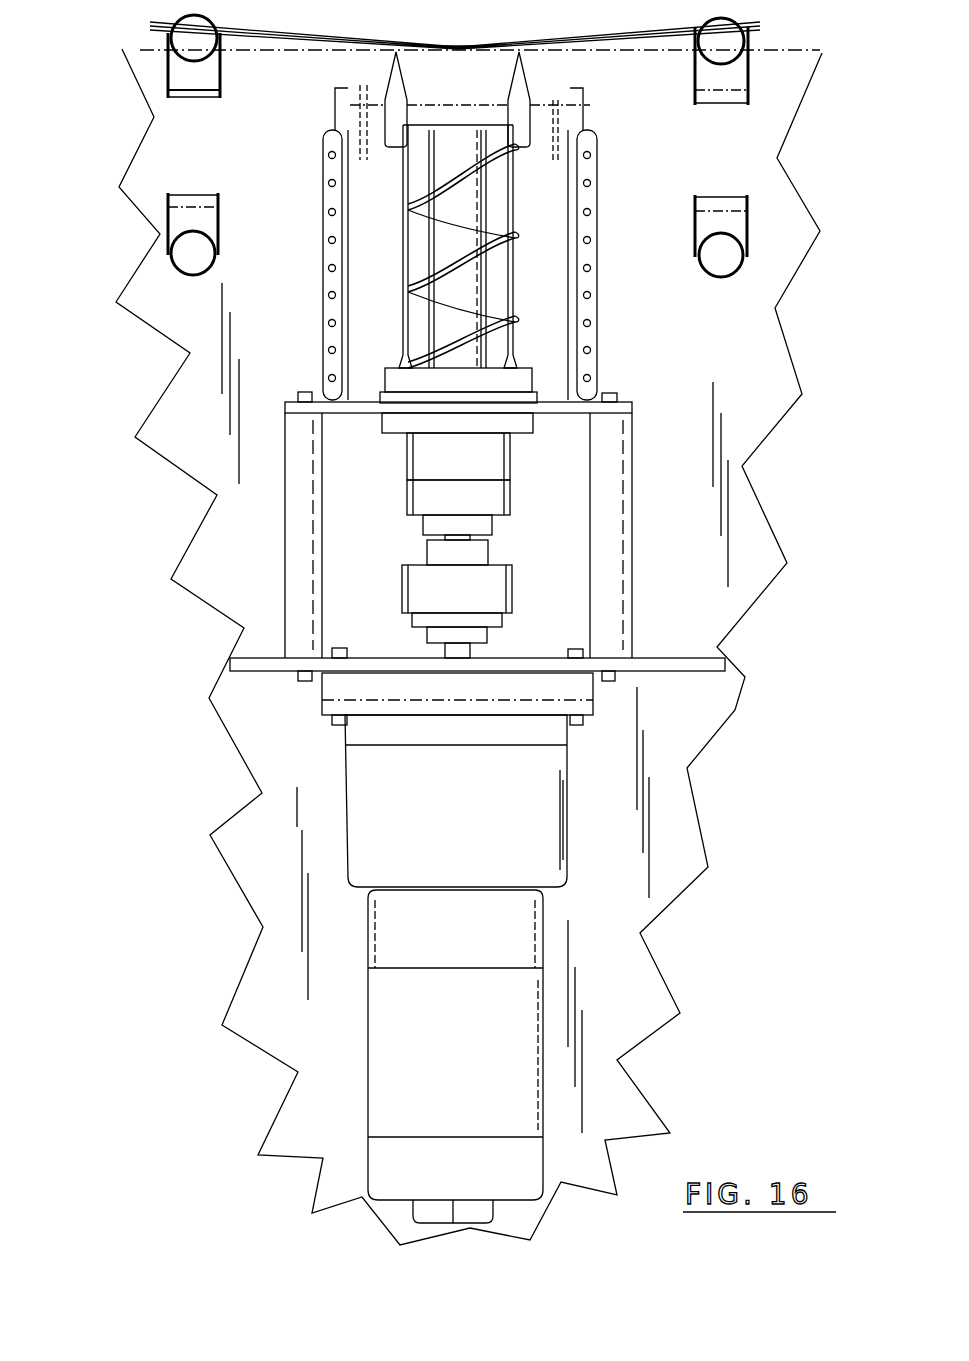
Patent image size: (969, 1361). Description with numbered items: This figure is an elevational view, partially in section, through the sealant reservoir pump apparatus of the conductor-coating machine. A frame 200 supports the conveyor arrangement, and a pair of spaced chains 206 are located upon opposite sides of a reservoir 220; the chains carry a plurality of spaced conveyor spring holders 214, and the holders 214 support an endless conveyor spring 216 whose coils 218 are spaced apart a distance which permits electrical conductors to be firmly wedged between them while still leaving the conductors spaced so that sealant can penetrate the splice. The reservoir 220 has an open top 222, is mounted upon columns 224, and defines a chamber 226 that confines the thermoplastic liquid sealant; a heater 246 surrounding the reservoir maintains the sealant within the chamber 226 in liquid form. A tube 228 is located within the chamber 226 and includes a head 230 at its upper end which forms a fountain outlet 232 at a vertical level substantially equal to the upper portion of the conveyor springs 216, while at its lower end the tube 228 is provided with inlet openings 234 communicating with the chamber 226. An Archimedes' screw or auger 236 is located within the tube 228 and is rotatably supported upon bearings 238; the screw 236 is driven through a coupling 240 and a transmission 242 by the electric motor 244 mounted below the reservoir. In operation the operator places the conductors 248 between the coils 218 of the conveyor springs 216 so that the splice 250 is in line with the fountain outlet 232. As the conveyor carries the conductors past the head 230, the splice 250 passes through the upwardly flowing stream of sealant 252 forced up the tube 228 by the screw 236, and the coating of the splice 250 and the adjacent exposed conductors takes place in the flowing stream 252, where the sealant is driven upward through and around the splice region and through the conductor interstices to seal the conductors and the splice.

The frame 200 is at (685, 660).
The chain 206 is at (198, 196).
The conveyor spring holder 214 is at (168, 84).
The conveyor spring 216 is at (166, 47).
The coils 218 is at (725, 276).
The reservoir 220 is at (349, 337).
The open top 222 is at (343, 127).
The columns 224 is at (298, 566).
The chamber 226 is at (577, 314).
The tube 228 is at (515, 262).
The head 230 is at (535, 122).
The fountain outlet 232 is at (513, 62).
The inlet openings 234 is at (400, 358).
The auger 236 is at (460, 185).
The bearings 238 is at (471, 476).
The coupling 240 is at (468, 604).
The transmission 242 is at (470, 844).
The electric motor 244 is at (451, 1079).
The heater 246 is at (323, 276).
The conductors 248 is at (262, 38).
The splice 250 is at (458, 46).
The flowing stream 252 is at (540, 80).